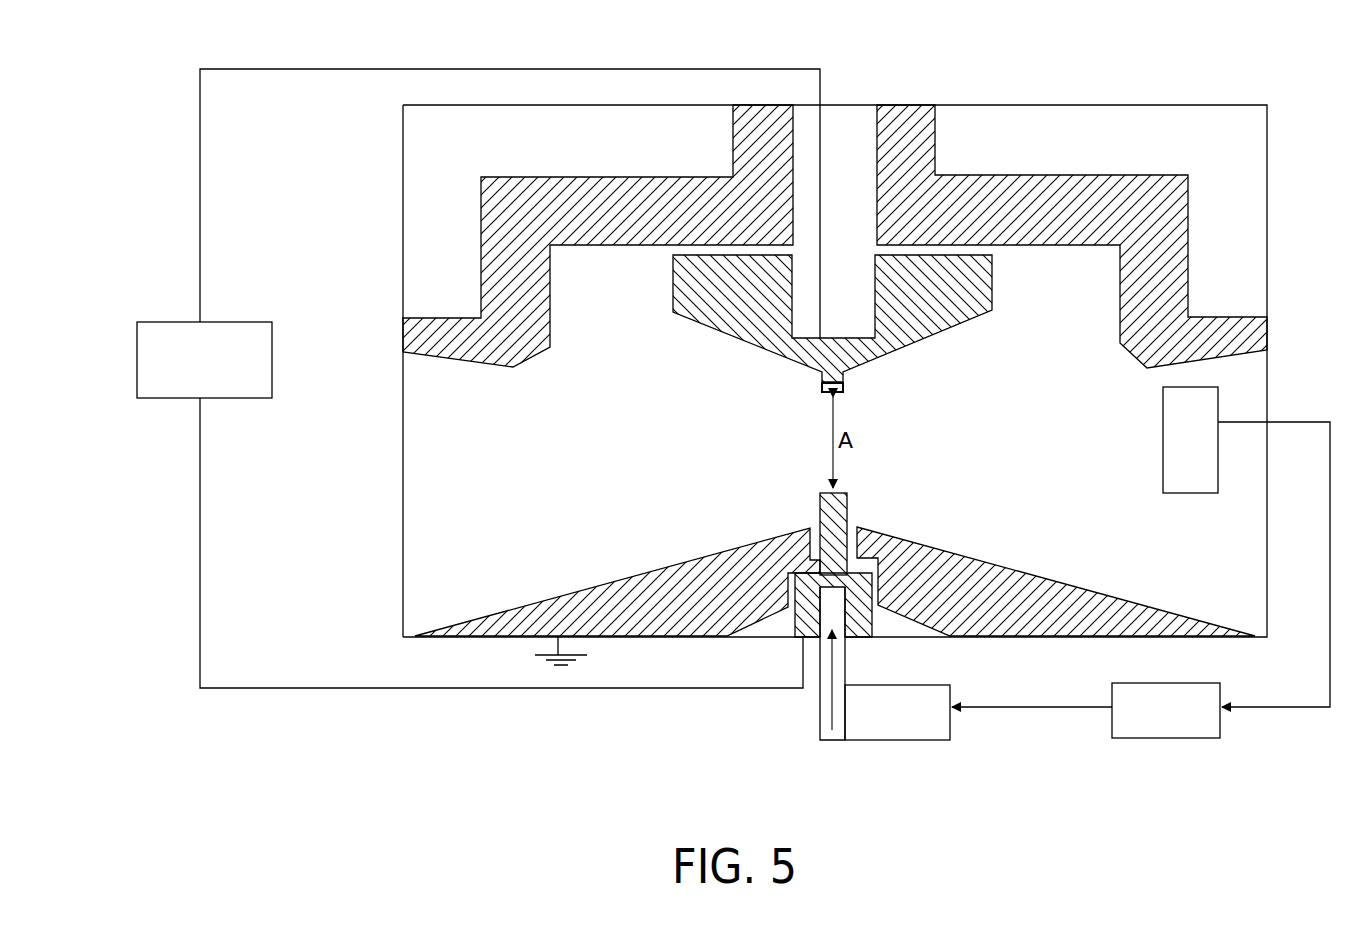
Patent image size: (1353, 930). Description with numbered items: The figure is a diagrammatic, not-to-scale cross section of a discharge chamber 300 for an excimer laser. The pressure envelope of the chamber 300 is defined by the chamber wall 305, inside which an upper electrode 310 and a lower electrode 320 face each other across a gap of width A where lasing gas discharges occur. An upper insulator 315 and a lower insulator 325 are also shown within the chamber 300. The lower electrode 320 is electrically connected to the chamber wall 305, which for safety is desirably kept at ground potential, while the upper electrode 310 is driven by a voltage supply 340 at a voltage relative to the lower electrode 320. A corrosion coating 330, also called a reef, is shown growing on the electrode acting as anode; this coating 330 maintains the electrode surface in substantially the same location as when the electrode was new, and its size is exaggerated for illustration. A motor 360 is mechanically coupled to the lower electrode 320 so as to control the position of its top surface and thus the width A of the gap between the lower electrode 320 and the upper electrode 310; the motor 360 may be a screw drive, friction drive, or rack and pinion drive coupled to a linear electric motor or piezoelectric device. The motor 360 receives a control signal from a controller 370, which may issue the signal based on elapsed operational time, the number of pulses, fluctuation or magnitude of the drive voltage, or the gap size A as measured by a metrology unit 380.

The chamber 300 is at (520, 471).
The chamber wall 305 is at (404, 493).
The upper electrode 310 is at (975, 323).
The upper insulator 315 is at (550, 298).
The lower electrode 320 is at (818, 512).
The lower insulator 325 is at (572, 588).
The corrosion coating 330 is at (845, 390).
The voltage supply 340 is at (272, 362).
The motor 360 is at (950, 725).
The controller 370 is at (1220, 722).
The metrology unit 380 is at (1163, 478).